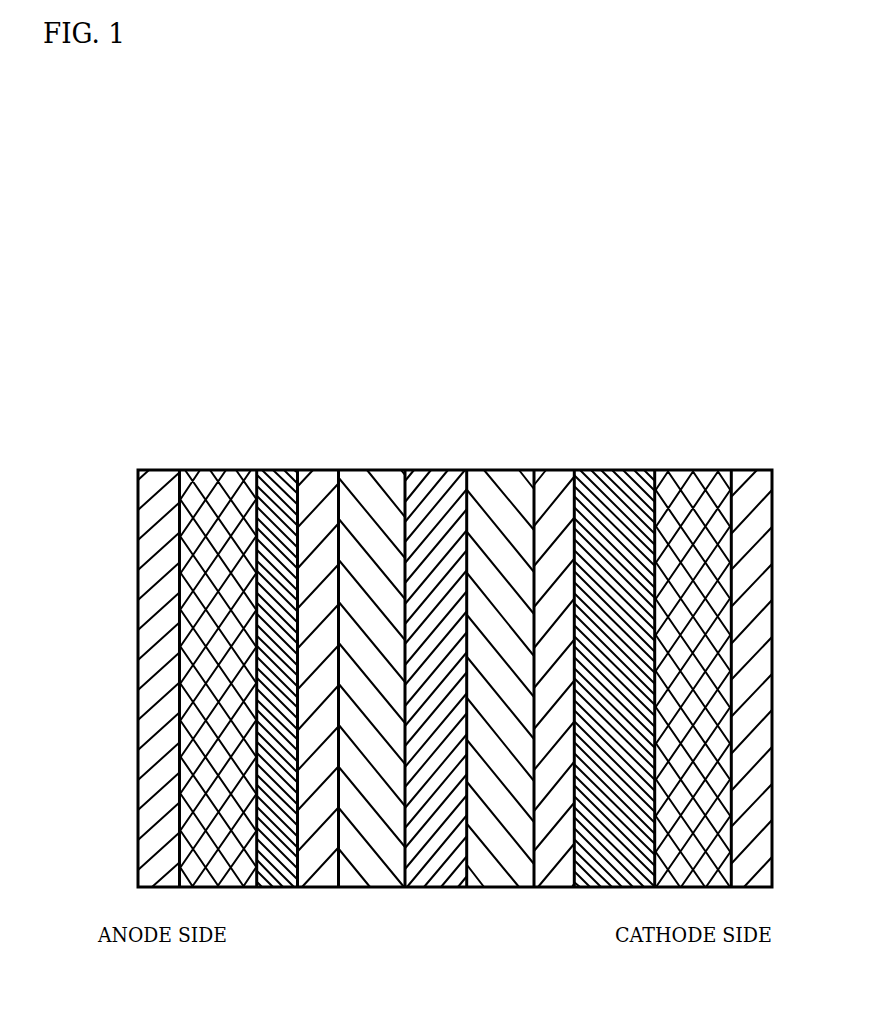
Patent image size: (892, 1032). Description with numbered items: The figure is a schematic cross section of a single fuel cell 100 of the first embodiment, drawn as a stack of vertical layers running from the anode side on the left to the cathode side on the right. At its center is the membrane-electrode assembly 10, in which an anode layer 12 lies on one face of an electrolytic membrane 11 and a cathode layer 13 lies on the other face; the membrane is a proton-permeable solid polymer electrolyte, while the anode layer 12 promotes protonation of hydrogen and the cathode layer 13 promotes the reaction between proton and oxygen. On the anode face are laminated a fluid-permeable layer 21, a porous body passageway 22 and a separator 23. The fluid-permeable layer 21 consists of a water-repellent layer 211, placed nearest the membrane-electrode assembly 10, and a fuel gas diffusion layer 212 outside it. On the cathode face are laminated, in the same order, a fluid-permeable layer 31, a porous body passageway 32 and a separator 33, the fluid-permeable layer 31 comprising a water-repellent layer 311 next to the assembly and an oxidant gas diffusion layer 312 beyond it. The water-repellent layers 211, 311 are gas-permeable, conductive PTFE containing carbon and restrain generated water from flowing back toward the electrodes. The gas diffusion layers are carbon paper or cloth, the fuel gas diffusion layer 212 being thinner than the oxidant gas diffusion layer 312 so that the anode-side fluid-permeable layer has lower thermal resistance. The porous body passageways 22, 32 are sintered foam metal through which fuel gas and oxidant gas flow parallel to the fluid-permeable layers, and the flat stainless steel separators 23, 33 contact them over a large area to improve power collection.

The fuel cell 100 is at (705, 256).
The membrane-electrode assembly 10 is at (436, 604).
The electrolytic membrane 11 is at (442, 480).
The anode layer 12 is at (382, 480).
The cathode layer 13 is at (500, 632).
The fluid-permeable layer 21 is at (294, 604).
The water-repellent layer 211 is at (322, 480).
The fuel gas diffusion layer 212 is at (273, 480).
The porous body passageway 22 is at (233, 480).
The separator 23 is at (153, 480).
The fluid-permeable layer 31 is at (594, 604).
The water-repellent layer 311 is at (560, 480).
The oxidant gas diffusion layer 312 is at (615, 480).
The porous body passageway 32 is at (682, 480).
The separator 33 is at (747, 480).